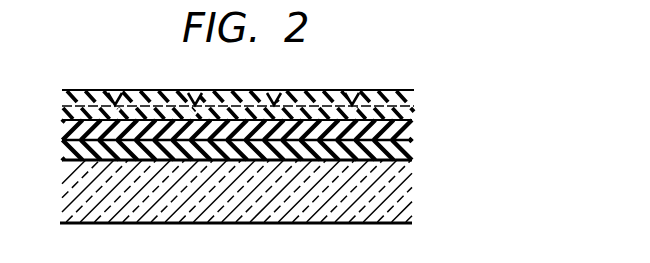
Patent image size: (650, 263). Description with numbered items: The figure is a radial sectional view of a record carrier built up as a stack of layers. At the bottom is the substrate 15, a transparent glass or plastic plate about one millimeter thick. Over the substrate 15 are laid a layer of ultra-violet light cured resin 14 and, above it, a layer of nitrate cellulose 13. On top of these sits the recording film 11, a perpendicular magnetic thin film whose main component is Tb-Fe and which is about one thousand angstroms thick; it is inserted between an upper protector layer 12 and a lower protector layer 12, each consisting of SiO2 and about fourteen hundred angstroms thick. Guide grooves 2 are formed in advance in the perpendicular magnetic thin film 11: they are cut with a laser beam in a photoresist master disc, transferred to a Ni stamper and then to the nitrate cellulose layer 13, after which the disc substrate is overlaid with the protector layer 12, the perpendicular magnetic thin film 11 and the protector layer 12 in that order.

The guide groove 2 is at (352, 99).
The recording film 11 is at (67, 106).
The protector layer 12 is at (416, 99).
The nitrate cellulose layer 13 is at (411, 142).
The ultra-violet light cured resin layer 14 is at (412, 153).
The substrate 15 is at (405, 202).